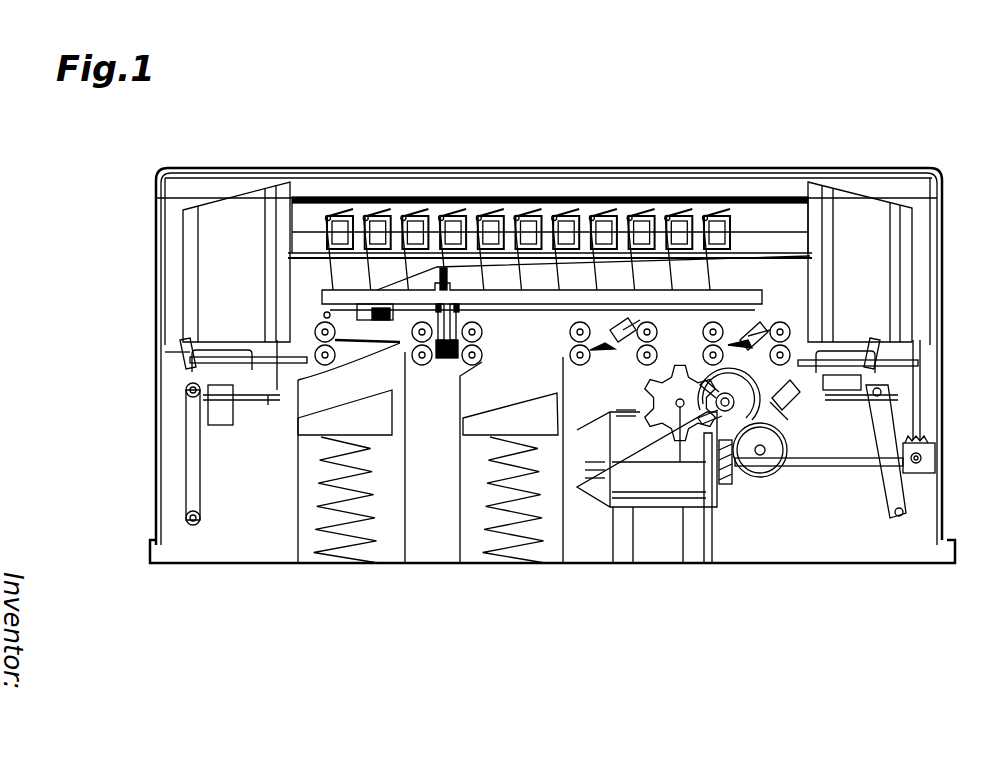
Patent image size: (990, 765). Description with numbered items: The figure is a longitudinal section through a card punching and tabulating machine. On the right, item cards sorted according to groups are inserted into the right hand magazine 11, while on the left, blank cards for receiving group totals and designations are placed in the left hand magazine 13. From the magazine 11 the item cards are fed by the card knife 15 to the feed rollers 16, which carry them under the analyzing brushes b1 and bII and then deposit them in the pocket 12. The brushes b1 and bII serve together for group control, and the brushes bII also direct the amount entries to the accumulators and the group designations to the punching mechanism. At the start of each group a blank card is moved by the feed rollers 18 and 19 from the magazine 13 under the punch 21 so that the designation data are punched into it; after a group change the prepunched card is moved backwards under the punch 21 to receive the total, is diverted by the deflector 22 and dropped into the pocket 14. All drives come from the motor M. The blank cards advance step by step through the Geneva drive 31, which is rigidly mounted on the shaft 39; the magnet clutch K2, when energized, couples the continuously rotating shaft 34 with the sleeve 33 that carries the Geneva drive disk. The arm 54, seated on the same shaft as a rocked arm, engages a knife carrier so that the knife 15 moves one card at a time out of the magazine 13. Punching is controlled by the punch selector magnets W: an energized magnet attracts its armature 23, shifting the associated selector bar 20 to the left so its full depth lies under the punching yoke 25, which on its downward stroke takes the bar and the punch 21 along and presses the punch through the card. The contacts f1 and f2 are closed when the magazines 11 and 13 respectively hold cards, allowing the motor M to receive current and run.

The right hand magazine 11 is at (875, 205).
The pocket 12 is at (550, 522).
The left hand magazine 13 is at (237, 205).
The pocket 14 is at (312, 522).
The card knife 15 is at (186, 350).
The feed rollers 16 is at (800, 330).
The feed rollers 18 is at (321, 325).
The feed rollers 19 is at (462, 368).
The selector bar 20 is at (464, 290).
The punch 21 is at (448, 303).
The deflector 22 is at (387, 347).
The armature 23 is at (384, 210).
The punching yoke 25 is at (441, 268).
The Geneva drive 31 is at (663, 422).
The sleeve 33 is at (727, 410).
The shaft 34 is at (714, 500).
The shaft 39 is at (678, 441).
The arm 54 is at (188, 478).
The punch selector magnets W is at (344, 214).
The motor M is at (655, 508).
The analyzing brushes b1 is at (770, 327).
The analyzing brushes bII is at (606, 350).
The contact f1 is at (828, 402).
The contact f2 is at (276, 400).
The magnet clutch K2 is at (735, 410).